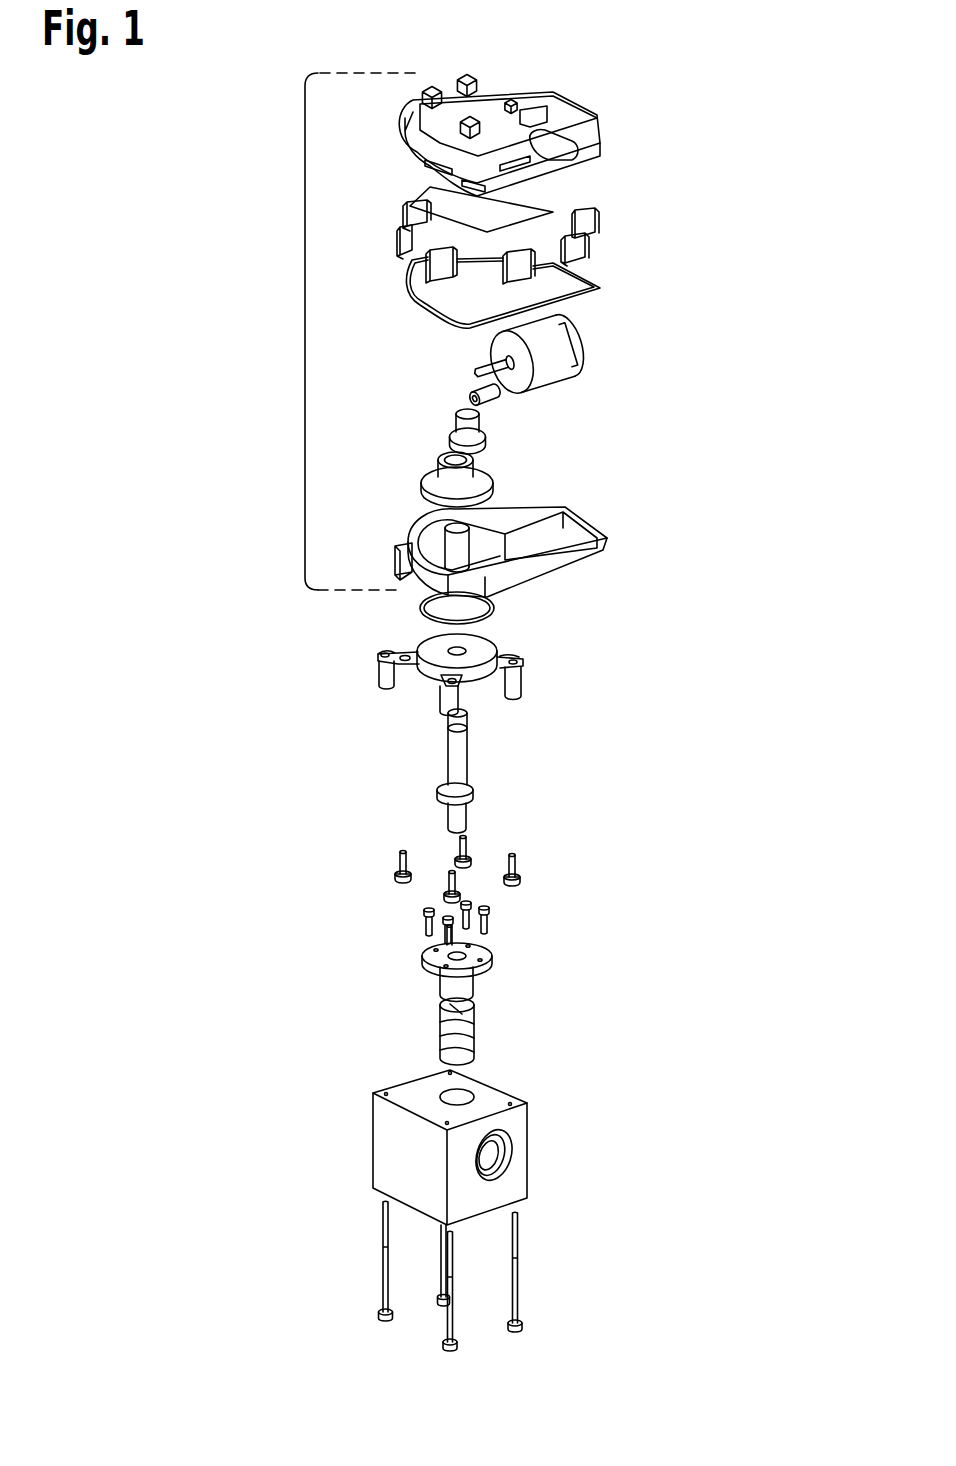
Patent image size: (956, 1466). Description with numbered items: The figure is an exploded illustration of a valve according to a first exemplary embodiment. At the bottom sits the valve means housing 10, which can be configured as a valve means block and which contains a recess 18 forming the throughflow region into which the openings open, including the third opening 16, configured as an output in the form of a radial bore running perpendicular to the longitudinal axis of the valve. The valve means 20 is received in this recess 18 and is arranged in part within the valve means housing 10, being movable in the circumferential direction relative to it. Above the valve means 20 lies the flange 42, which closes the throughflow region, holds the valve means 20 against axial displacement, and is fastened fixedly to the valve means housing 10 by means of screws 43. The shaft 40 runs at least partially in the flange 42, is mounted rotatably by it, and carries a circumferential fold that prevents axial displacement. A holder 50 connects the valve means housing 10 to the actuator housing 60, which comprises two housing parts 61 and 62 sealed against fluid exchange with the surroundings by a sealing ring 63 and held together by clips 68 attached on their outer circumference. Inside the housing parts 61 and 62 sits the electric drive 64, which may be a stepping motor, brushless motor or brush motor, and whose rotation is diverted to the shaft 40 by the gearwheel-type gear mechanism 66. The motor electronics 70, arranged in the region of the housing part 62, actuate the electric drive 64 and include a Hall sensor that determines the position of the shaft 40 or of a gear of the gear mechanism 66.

The valve means housing 10 is at (507, 1124).
The third opening 16 is at (494, 1152).
The recess / throughflow region 18 is at (458, 1097).
The valve means 20 is at (474, 1032).
The shaft 40 is at (462, 766).
The flange 42 is at (492, 950).
The screws 43 is at (490, 918).
The holder 50 is at (500, 650).
The actuator housing 60 is at (305, 322).
The housing part 61 is at (590, 545).
The housing part 62 is at (578, 132).
The sealing ring 63 is at (590, 300).
The electric drive 64 is at (555, 352).
The gear mechanism 66 is at (510, 392).
The clips 68 is at (578, 245).
The motor electronics 70 is at (440, 191).